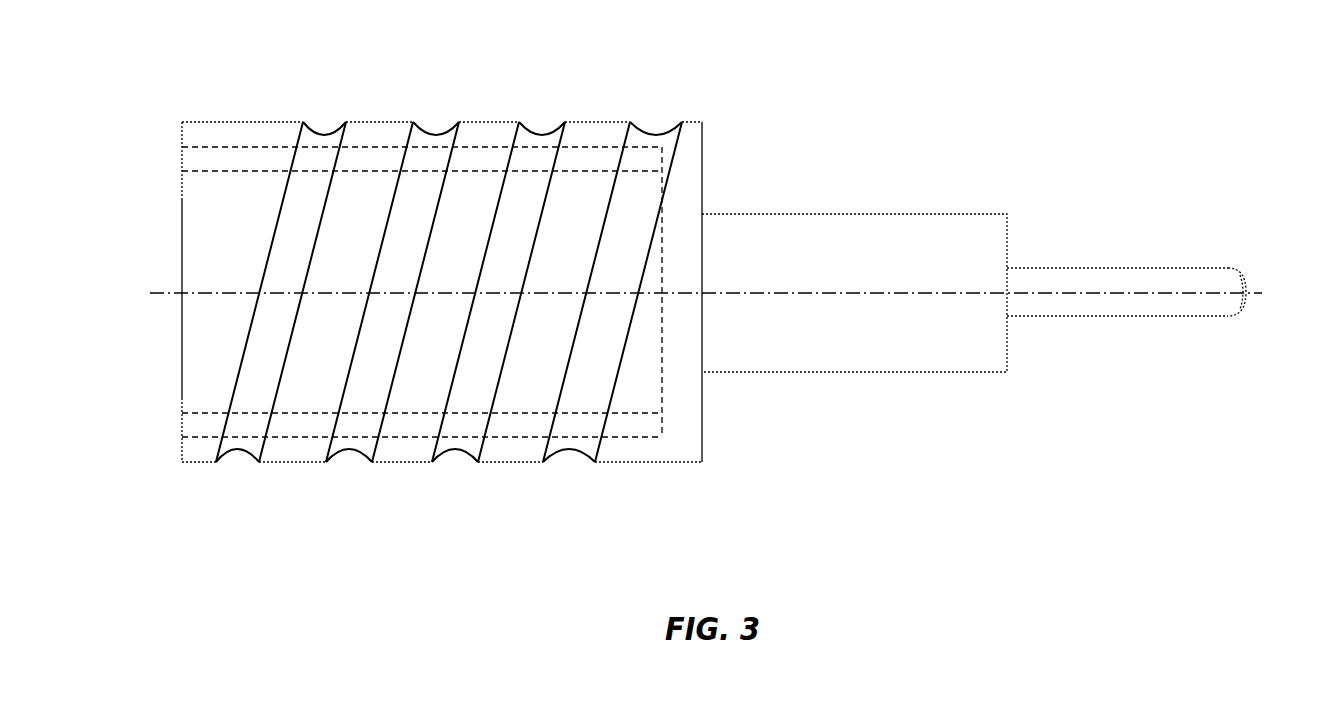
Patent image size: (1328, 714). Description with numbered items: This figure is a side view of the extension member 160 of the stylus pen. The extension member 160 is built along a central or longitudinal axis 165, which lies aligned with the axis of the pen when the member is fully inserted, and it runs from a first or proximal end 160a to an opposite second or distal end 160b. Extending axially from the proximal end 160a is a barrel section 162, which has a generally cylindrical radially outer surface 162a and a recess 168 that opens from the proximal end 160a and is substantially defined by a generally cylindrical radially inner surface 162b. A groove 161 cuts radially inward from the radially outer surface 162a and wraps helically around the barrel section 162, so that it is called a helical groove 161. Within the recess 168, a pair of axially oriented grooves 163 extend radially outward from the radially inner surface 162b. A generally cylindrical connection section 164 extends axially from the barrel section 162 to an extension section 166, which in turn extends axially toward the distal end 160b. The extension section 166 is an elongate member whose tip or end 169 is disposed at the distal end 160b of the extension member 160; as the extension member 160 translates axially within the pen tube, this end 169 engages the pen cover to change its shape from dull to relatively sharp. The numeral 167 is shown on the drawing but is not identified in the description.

The extension member 160 is at (988, 40).
The proximal end 160a is at (175, 460).
The distal end 160b is at (1243, 312).
The helical groove 161 is at (326, 118).
The barrel section 162 is at (551, 84).
The radially outer surface 162a is at (238, 122).
The radially inner surface 162b is at (303, 403).
The axially oriented grooves 163 is at (511, 430).
The connection section 164 is at (846, 187).
The longitudinal axis 165 is at (800, 293).
The extension section 166 is at (1110, 248).
The tip shaft lower surface 167 is at (1083, 320).
The recess 168 is at (205, 230).
The tip 169 is at (1242, 275).